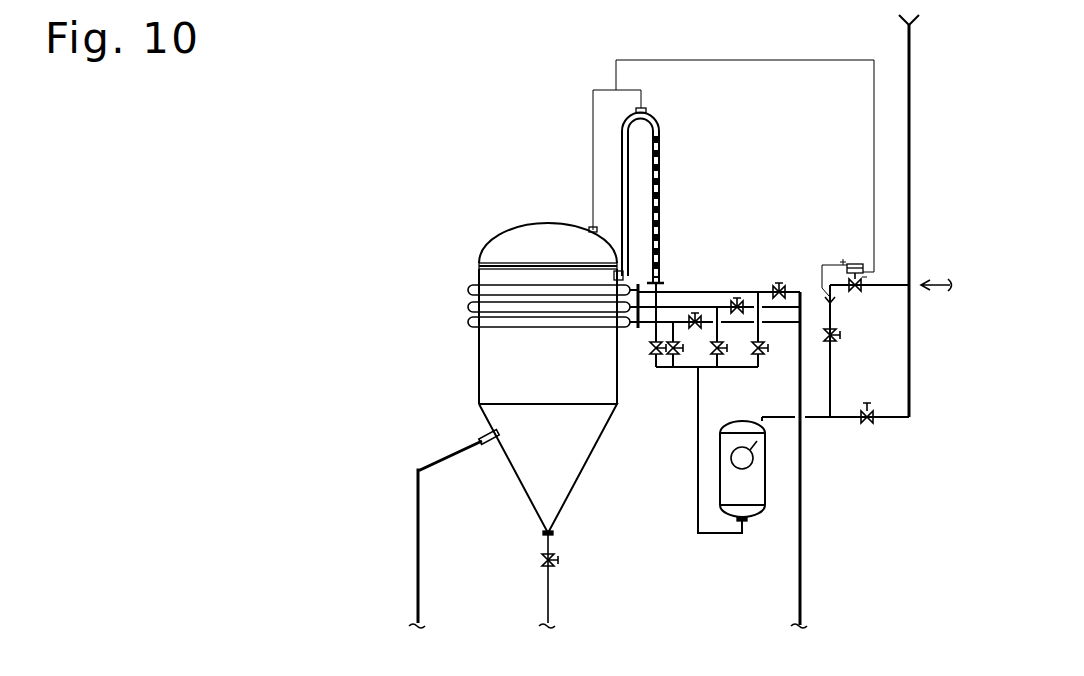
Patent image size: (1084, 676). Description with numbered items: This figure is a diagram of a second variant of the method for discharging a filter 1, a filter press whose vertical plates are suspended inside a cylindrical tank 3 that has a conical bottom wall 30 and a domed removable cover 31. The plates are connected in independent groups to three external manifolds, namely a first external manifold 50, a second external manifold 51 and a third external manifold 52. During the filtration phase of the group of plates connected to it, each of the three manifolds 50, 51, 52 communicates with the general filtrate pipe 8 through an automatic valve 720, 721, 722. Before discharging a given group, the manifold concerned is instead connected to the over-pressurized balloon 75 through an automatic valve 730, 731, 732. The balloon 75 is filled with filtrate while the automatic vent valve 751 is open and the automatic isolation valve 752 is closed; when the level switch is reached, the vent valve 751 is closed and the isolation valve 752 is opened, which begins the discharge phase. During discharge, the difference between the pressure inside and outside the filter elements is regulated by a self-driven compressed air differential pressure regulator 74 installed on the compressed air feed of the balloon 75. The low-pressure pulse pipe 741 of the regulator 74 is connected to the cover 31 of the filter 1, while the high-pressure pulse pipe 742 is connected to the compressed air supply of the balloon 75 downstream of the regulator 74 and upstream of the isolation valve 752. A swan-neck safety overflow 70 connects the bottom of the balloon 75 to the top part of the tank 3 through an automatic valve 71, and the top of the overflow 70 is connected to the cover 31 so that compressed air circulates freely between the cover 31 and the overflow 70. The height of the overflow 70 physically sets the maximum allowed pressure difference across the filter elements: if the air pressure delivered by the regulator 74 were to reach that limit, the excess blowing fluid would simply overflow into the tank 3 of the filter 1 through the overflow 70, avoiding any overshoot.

The filter 1 is at (411, 191).
The tank 3 is at (500, 378).
The conical bottom wall 30 is at (530, 486).
The domed removable cover 31 is at (497, 252).
The first external manifold 50 is at (468, 323).
The second external manifold 51 is at (468, 307).
The third external manifold 52 is at (468, 289).
The swan-neck safety overflow 70 is at (660, 178).
The automatic valve 71 is at (651, 355).
The automatic valve 720 is at (703, 320).
The automatic valve 721 is at (741, 305).
The automatic valve 722 is at (783, 291).
The automatic valve 730 is at (677, 360).
The automatic valve 731 is at (719, 360).
The automatic valve 732 is at (763, 360).
The self-driven compressed air differential pressure regulator 74 is at (862, 282).
The low-pressure pulse pipe 741 is at (720, 60).
The high-pressure pulse pipe 742 is at (835, 265).
The over-pressurized balloon 75 is at (752, 469).
The automatic vent valve 751 is at (878, 422).
The automatic isolation valve 752 is at (838, 335).
The general filtrate pipe 8 is at (805, 566).